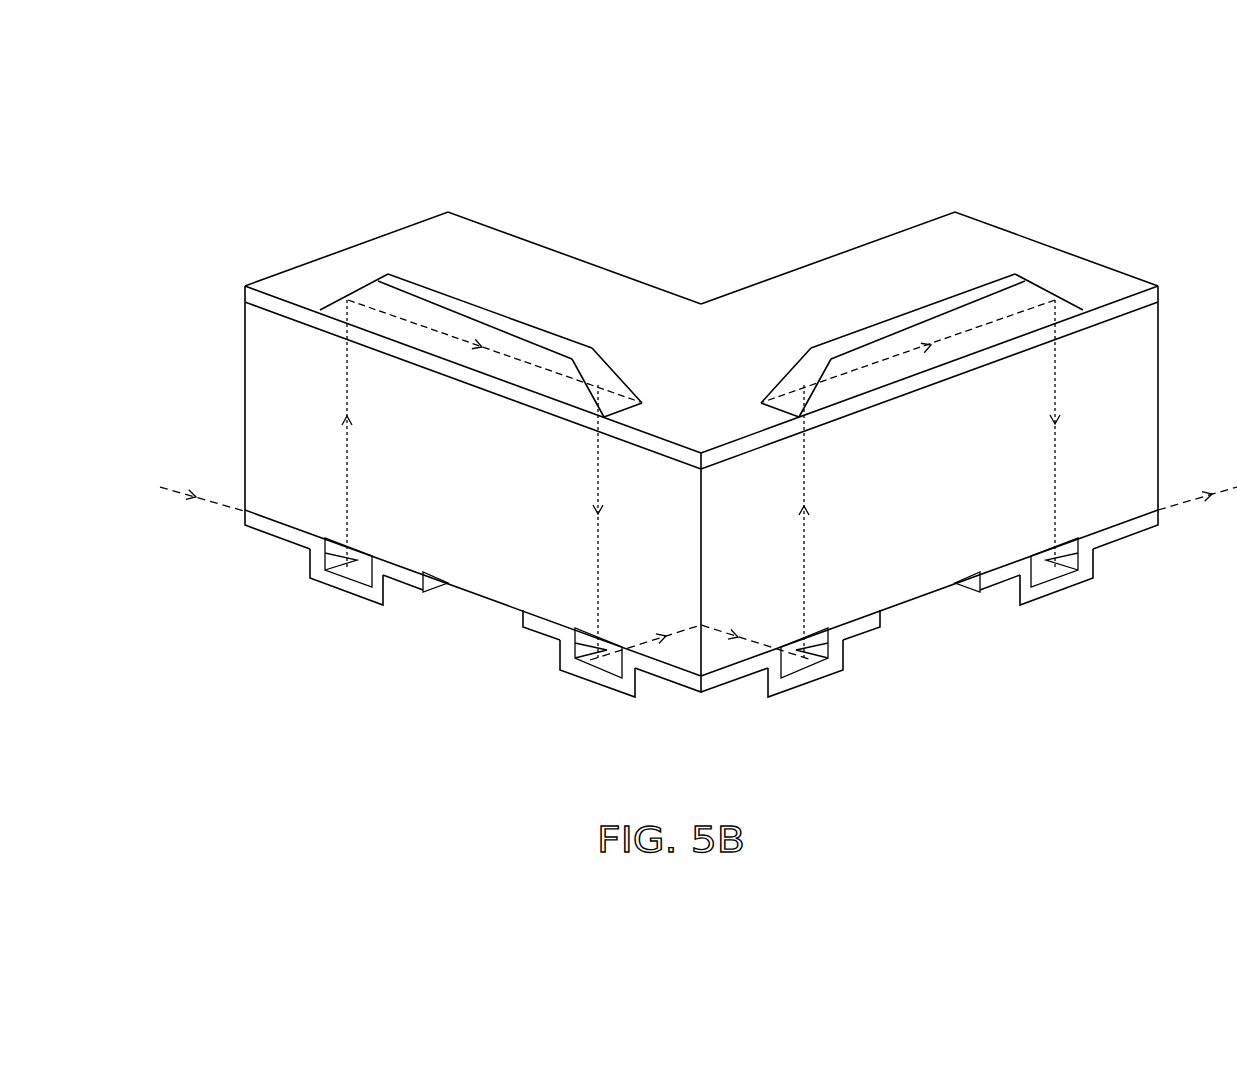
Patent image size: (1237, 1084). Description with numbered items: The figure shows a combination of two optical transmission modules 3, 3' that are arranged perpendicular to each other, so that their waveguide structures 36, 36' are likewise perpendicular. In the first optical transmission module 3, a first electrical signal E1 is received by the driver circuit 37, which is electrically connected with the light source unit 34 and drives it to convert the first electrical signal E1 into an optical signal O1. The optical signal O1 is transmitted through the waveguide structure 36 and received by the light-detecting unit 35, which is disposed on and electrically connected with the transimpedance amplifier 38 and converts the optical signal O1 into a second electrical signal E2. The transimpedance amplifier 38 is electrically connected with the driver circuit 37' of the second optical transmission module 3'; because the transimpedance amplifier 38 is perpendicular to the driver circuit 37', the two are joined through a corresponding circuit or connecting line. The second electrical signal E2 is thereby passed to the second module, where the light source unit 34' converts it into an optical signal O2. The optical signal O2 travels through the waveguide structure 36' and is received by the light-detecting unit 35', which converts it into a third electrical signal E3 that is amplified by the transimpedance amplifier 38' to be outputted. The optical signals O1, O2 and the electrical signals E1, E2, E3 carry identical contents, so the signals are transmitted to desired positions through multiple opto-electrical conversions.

The optical transmission module 3 is at (462, 495).
The optical transmission module 3' is at (959, 490).
The light source unit 34 is at (340, 591).
The light source unit 34' is at (814, 682).
The light-detecting unit 35 is at (590, 682).
The light-detecting unit 35' is at (1064, 591).
The waveguide structure 36 is at (481, 341).
The waveguide structure 36' is at (922, 345).
The driver circuit 37 is at (342, 551).
The driver circuit 37' is at (790, 673).
The transimpedance amplifier 38 is at (612, 673).
The transimpedance amplifier 38' is at (1063, 551).
The optical signal O1 is at (600, 563).
The optical signal O2 is at (806, 563).
The first electrical signal E1 is at (217, 508).
The second electrical signal E2 is at (682, 624).
The third electrical signal E3 is at (1183, 508).